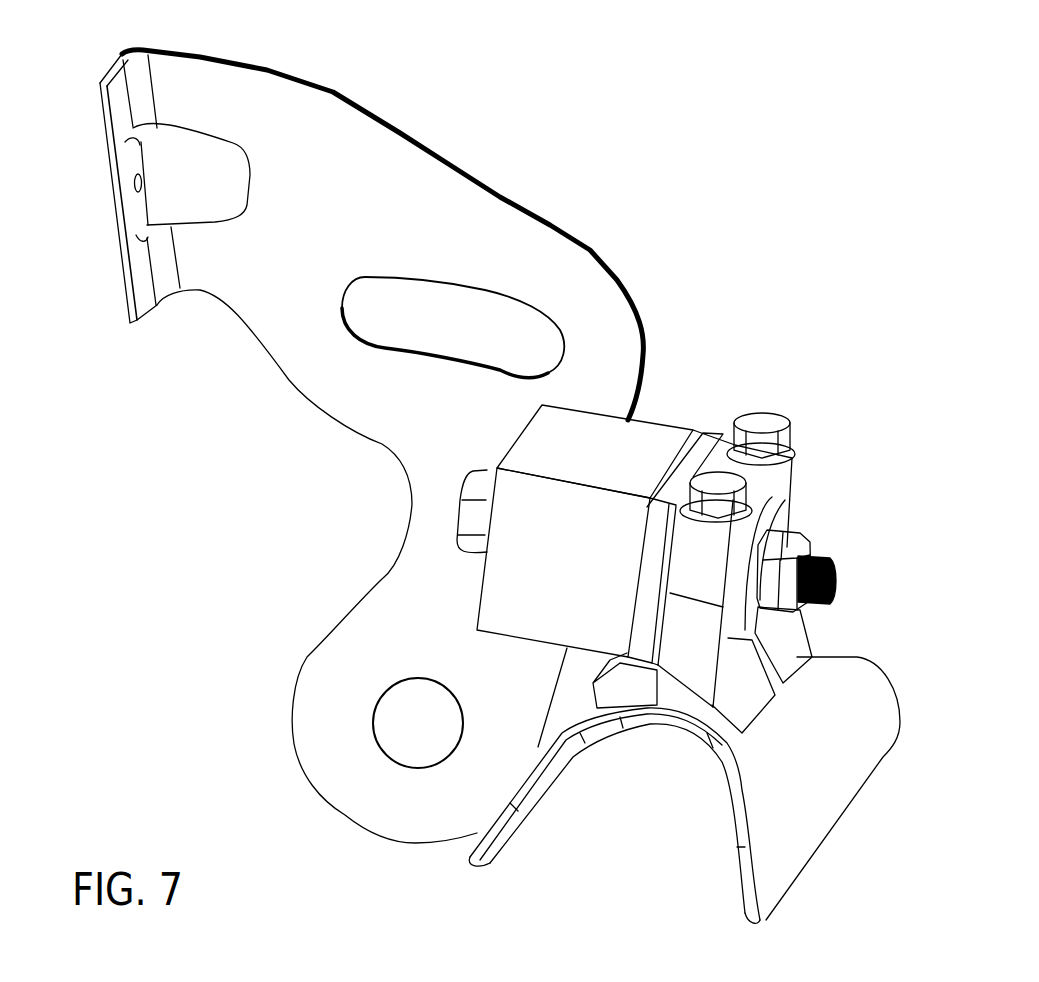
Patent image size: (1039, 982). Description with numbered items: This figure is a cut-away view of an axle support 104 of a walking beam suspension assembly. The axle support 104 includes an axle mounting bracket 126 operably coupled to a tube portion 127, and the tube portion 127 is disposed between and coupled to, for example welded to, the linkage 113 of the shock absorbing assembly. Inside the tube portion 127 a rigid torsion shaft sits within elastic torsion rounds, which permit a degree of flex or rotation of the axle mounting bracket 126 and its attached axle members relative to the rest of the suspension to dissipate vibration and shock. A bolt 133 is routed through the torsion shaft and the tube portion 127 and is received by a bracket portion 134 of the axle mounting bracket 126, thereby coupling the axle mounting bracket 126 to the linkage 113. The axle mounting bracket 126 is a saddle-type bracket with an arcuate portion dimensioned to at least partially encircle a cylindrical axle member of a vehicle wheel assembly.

The axle support 104 is at (752, 340).
The linkage 113 is at (422, 193).
The axle mounting bracket 126 is at (890, 587).
The tube portion 127 is at (590, 437).
The bolt 133 is at (838, 565).
The bracket portion 134 is at (684, 680).